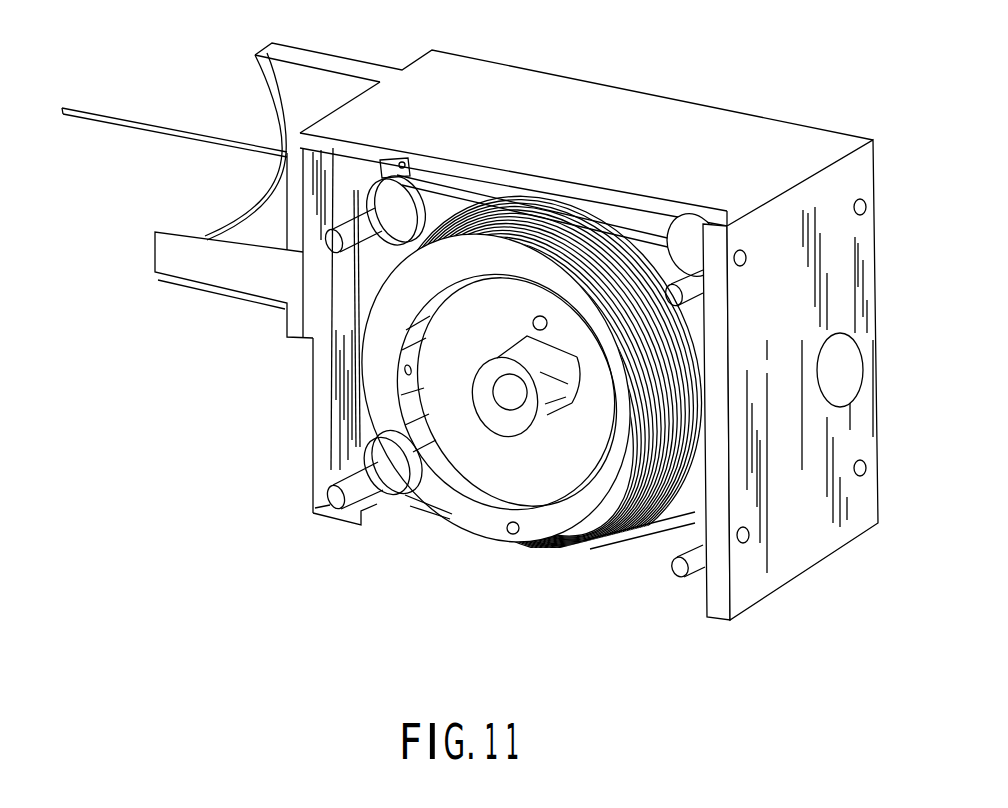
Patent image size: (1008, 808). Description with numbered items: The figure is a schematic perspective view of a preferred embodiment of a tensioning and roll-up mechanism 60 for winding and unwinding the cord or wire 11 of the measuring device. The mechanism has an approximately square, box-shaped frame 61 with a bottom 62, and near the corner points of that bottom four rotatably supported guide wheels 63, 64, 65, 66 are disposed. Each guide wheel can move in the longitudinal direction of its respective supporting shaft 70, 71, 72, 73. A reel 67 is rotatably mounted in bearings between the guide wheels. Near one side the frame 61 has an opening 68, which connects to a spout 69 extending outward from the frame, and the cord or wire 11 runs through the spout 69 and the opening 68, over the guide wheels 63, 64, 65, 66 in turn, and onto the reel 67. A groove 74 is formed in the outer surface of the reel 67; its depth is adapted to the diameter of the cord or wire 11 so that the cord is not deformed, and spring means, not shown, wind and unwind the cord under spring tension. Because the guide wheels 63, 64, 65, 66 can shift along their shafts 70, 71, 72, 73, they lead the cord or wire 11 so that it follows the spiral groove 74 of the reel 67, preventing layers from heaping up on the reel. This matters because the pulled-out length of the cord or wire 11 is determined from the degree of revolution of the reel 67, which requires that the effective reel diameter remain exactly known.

The cord or wire 11 is at (147, 122).
The tensioning and roll-up mechanism 60 is at (485, 563).
The frame 61 is at (757, 578).
The bottom 62 is at (442, 220).
The guide wheel 63 is at (680, 232).
The guide wheel 64 is at (655, 530).
The guide wheel 65 is at (386, 498).
The guide wheel 66 is at (357, 281).
The reel 67 is at (545, 538).
The opening 68 is at (383, 177).
The spout 69 is at (283, 78).
The supporting shaft 70 is at (706, 297).
The supporting shaft 71 is at (678, 572).
The supporting shaft 72 is at (333, 506).
The supporting shaft 73 is at (330, 245).
The groove 74 is at (532, 246).